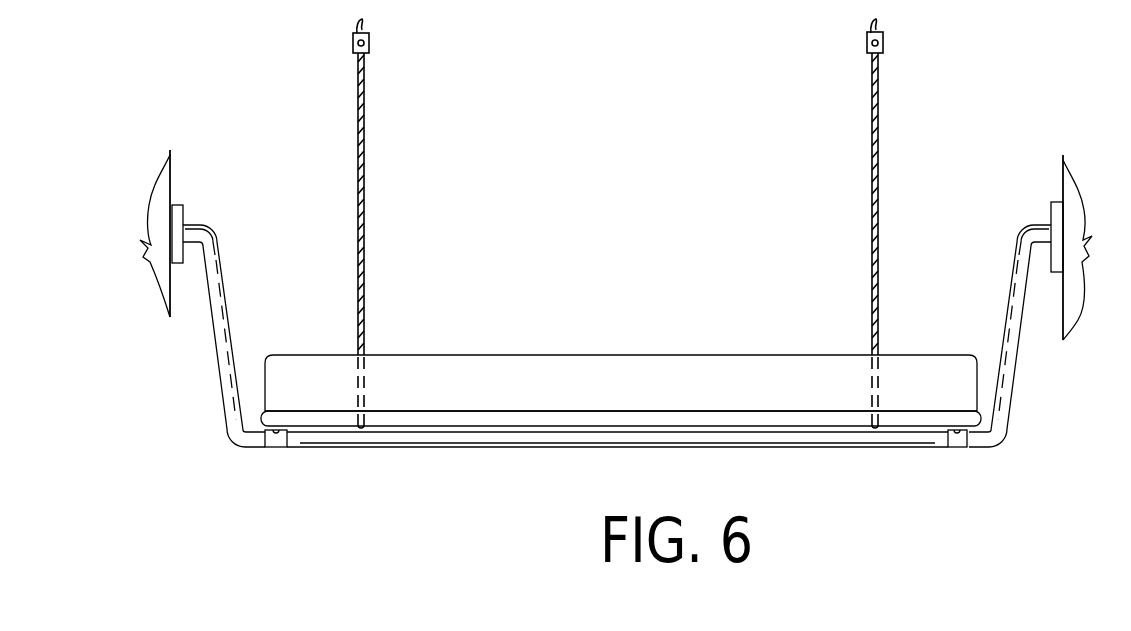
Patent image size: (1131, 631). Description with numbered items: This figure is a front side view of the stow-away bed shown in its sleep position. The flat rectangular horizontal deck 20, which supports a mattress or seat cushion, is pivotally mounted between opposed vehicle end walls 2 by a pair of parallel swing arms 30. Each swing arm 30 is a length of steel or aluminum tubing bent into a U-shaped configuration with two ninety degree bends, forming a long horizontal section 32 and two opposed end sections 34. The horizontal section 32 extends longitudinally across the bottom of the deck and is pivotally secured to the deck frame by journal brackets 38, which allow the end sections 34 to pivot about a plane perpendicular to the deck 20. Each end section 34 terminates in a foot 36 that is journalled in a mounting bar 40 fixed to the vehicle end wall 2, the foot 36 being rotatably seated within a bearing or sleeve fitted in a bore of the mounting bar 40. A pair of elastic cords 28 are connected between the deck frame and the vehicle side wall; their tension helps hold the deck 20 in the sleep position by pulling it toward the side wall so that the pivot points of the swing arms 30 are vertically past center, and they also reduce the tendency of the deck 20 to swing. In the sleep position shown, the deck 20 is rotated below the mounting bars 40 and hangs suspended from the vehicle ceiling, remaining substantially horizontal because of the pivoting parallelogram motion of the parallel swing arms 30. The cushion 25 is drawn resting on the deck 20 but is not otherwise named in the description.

The vehicle end wall 2 is at (158, 207).
The mounting bar 40 is at (183, 207).
The foot 36 is at (207, 227).
The end section 34 is at (223, 323).
The cushion 25 is at (317, 365).
The elastic cord 28 is at (364, 225).
The deck 20 is at (463, 354).
The journal bracket 38 is at (282, 447).
The horizontal section 32 is at (490, 435).
The swing arm 30 is at (819, 447).